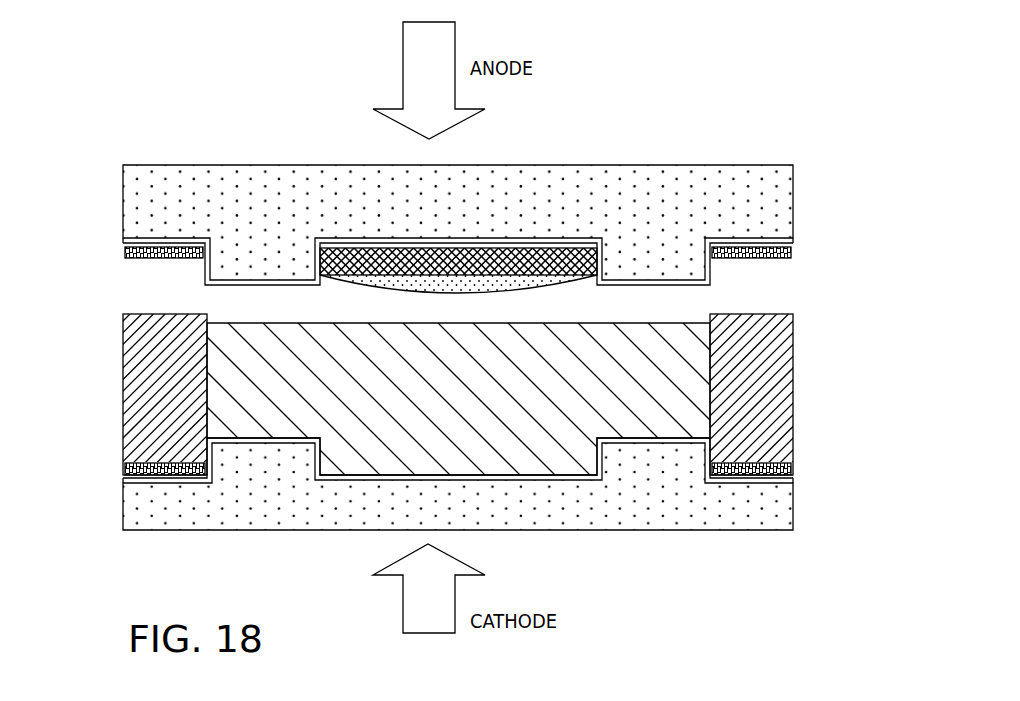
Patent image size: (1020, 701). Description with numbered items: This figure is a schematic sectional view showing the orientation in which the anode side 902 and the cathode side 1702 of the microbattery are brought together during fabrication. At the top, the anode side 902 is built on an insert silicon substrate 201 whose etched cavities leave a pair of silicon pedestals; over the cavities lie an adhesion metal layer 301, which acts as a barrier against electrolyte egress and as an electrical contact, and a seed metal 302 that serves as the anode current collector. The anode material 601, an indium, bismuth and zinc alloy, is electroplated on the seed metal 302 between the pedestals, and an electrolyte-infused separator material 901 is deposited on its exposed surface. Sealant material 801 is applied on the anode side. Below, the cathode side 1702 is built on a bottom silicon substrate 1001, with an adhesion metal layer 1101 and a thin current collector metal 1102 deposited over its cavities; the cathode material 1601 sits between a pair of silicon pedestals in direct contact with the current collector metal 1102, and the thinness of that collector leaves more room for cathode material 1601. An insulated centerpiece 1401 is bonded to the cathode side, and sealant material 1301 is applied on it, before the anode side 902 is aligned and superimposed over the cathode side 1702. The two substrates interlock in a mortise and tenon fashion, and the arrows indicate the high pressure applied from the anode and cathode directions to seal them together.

The insert silicon substrate 201 is at (476, 218).
The adhesion metal layer 301 is at (125, 240).
The seed metal 302 is at (125, 253).
The anode material 601 is at (356, 258).
The sealant material 801 is at (795, 253).
The electrolyte-infused separator material 901 is at (520, 285).
The anode side 902 is at (447, 213).
The bottom silicon substrate 1001 is at (478, 525).
The adhesion metal layer 1101 is at (125, 483).
The current collector metal 1102 is at (793, 480).
The sealant material 1301 is at (793, 468).
The insulated centerpiece 1401 is at (770, 399).
The cathode material 1601 is at (477, 399).
The cathode side 1702 is at (476, 457).